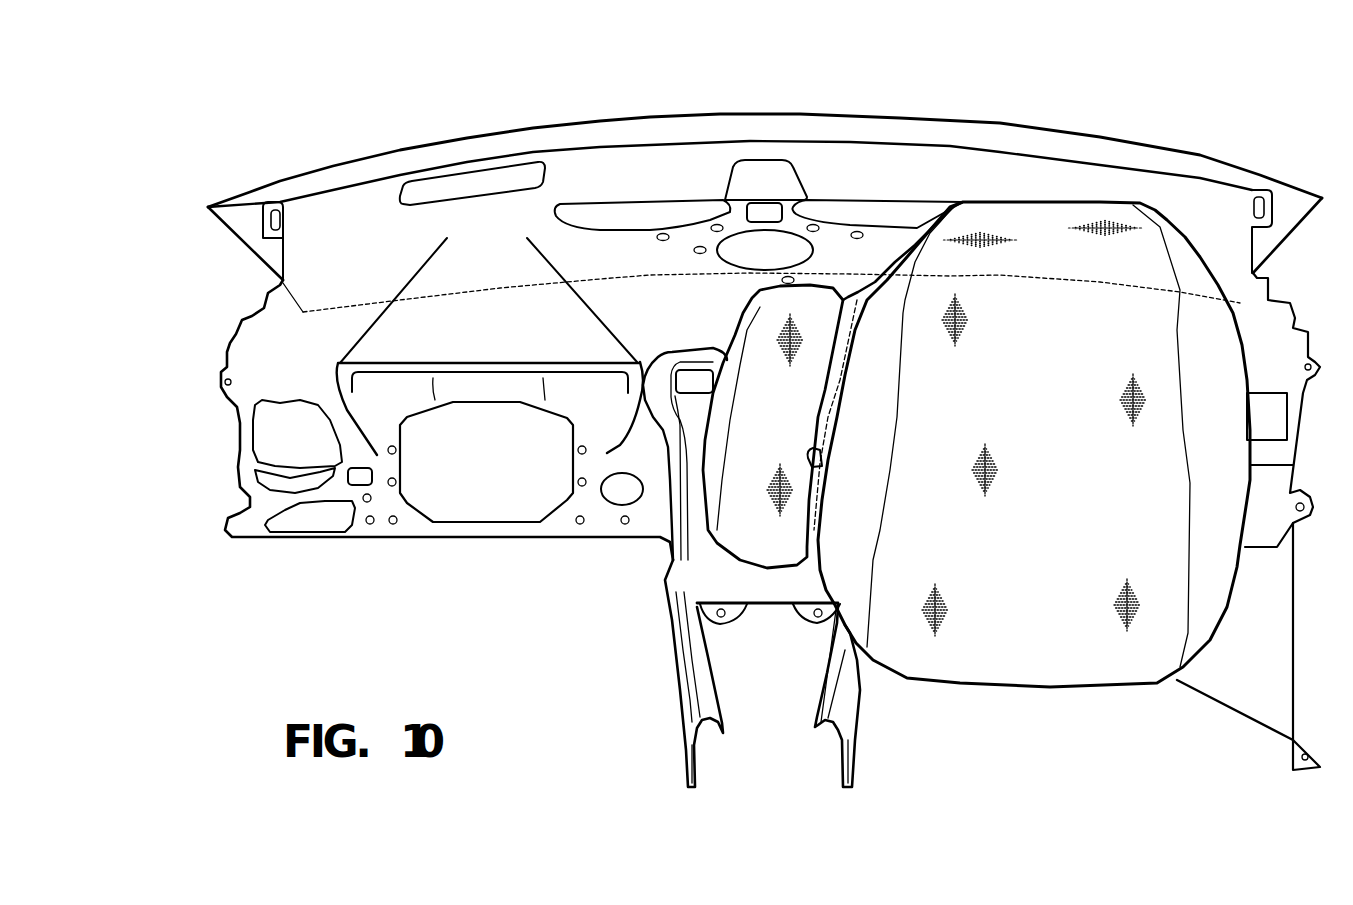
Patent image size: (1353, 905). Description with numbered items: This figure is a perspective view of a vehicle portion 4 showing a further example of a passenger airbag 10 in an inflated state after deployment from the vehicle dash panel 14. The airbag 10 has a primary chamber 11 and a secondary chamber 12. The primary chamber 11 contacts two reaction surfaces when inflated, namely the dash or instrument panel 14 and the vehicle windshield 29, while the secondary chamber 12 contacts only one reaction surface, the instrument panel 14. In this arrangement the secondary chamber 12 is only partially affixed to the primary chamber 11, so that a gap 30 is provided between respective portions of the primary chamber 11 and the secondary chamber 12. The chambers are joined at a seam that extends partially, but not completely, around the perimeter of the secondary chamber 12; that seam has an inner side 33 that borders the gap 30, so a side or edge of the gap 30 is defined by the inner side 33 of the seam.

The vehicle portion 4 is at (476, 93).
The vehicle windshield 29 is at (212, 207).
The vehicle dash panel 14 is at (537, 339).
The secondary chamber 12 is at (800, 439).
The primary chamber 11 is at (1076, 485).
The gap 30 is at (822, 410).
The inner side of the seam 33 is at (817, 463).
The passenger airbag 10 is at (1064, 700).